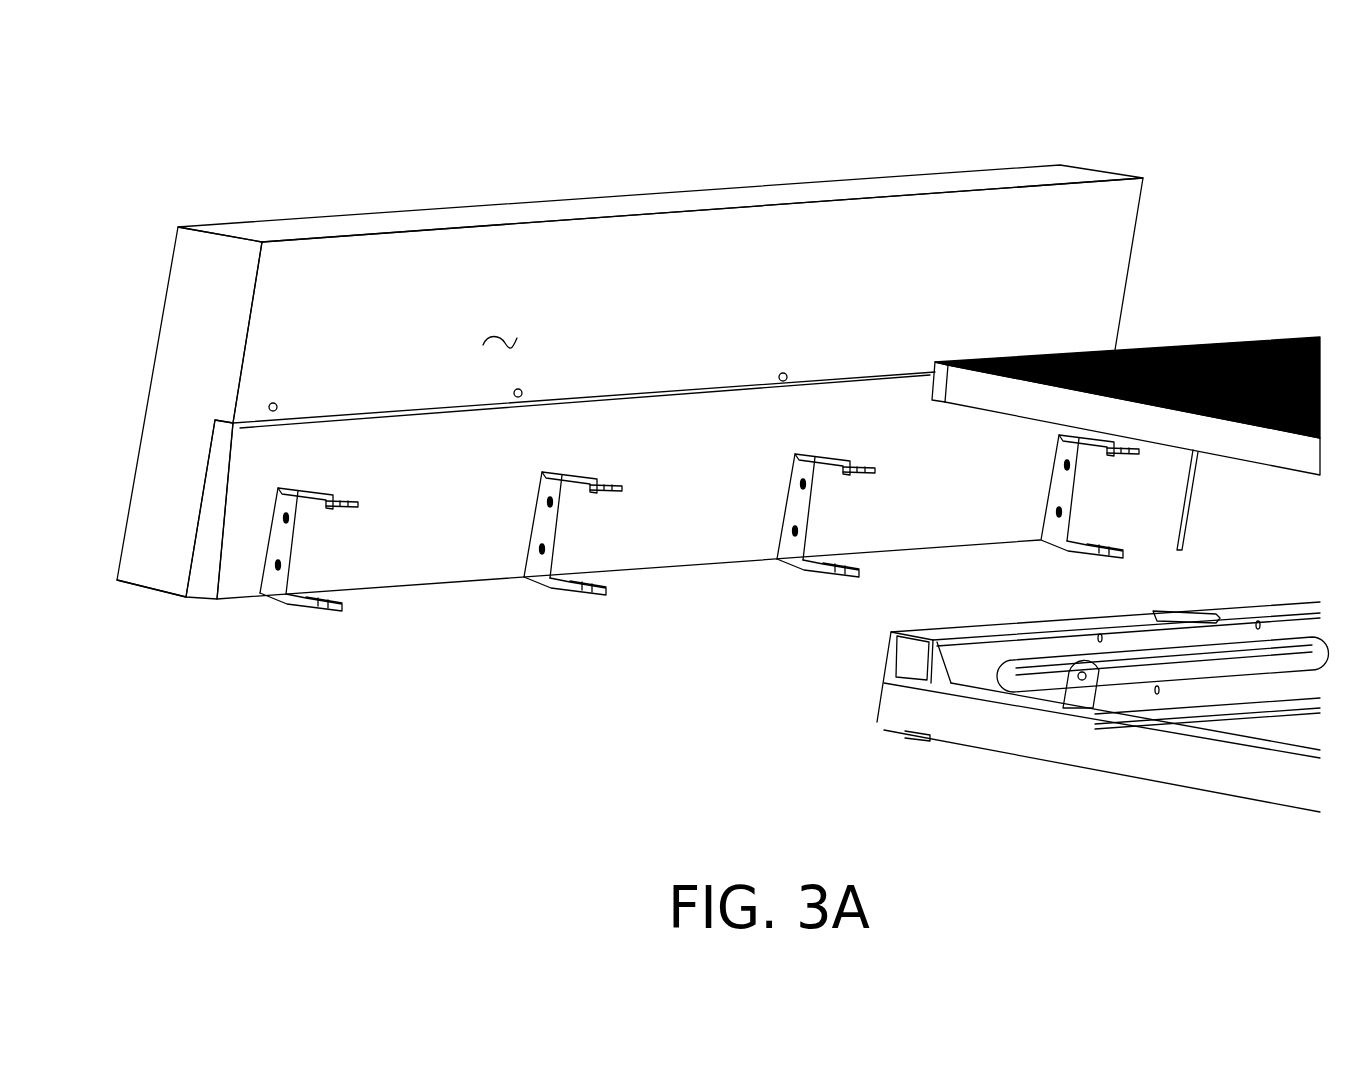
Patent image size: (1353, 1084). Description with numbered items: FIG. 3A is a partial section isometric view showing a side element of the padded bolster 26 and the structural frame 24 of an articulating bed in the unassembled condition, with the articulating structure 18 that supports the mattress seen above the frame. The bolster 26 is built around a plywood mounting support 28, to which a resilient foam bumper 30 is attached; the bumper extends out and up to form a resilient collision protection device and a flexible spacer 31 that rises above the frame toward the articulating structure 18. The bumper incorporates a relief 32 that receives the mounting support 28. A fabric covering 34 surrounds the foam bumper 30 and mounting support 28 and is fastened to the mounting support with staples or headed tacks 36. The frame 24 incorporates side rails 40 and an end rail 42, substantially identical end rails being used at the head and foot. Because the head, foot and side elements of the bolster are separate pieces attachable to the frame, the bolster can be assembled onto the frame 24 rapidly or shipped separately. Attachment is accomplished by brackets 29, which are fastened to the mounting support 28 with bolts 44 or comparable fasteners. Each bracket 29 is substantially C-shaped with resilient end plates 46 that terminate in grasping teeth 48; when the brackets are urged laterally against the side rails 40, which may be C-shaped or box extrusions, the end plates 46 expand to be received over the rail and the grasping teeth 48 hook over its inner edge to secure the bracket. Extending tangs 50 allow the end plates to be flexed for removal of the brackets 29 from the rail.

The articulating structure 18 is at (1008, 397).
The structural frame 24 is at (877, 698).
The padded bolster 26 is at (608, 207).
The mounting support 28 is at (233, 543).
The brackets 29 is at (638, 634).
The resilient foam bumper 30 is at (173, 427).
The flexible spacer 31 is at (208, 290).
The relief 32 is at (197, 508).
The fabric covering 34 is at (500, 327).
The staples or headed tacks 36 is at (276, 404).
The side rails 40 is at (972, 633).
The end rail 42 is at (987, 728).
The bolts 44 is at (290, 522).
The resilient end plates 46 is at (312, 492).
The grasping teeth 48 is at (347, 600).
The extending tangs 50 is at (358, 500).